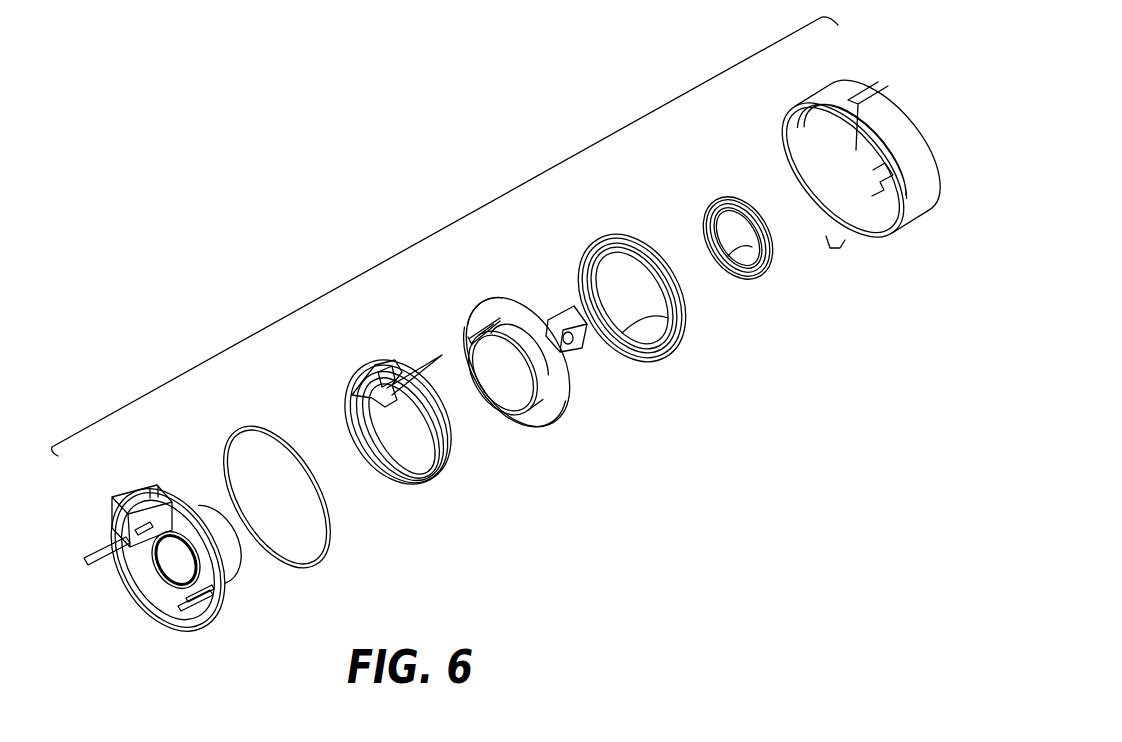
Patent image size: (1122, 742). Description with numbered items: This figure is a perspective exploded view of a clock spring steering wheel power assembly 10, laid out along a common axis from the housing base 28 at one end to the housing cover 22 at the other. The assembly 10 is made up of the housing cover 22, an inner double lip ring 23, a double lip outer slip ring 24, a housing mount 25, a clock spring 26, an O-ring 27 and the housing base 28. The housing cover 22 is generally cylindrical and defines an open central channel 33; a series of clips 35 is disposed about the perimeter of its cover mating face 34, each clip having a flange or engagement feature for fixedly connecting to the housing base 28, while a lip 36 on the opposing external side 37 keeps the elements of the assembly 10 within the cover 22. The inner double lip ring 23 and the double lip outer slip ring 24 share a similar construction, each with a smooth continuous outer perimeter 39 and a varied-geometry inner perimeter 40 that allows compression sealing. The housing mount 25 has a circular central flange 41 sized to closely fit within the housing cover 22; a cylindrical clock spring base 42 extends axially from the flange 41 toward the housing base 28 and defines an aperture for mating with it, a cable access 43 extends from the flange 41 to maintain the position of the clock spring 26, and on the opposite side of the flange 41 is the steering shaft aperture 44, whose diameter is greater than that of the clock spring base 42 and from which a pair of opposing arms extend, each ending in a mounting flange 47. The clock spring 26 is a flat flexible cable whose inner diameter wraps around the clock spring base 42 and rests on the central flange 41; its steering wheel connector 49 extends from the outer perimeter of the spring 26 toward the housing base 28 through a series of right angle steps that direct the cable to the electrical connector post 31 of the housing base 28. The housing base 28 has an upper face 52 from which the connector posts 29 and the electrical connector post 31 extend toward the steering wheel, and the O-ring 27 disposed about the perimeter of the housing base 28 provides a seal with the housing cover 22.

The clock spring steering wheel power assembly 10 is at (433, 237).
The housing cover 22 is at (850, 174).
The inner double lip ring 23 is at (756, 277).
The double lip outer slip ring 24 is at (658, 358).
The housing mount 25 is at (508, 361).
The clock spring 26 is at (388, 431).
The O-ring 27 is at (328, 544).
The housing base 28 is at (162, 564).
The connector posts 29 is at (103, 540).
The electrical connector post 31 is at (127, 505).
The open central channel 33 is at (857, 152).
The cover mating face 34 is at (870, 250).
The clips 35 is at (838, 250).
The lip 36 is at (840, 146).
The opposing external side 37 is at (928, 140).
The outer perimeter 39 is at (613, 235).
The inner perimeter 40 is at (673, 318).
The circular central flange 41 is at (490, 300).
The clock spring base 42 is at (516, 412).
The cable access 43 is at (473, 322).
The steering shaft aperture 44 is at (552, 316).
The mounting flange 47 is at (568, 310).
The steering wheel connector 49 is at (365, 372).
The upper face 52 is at (150, 590).